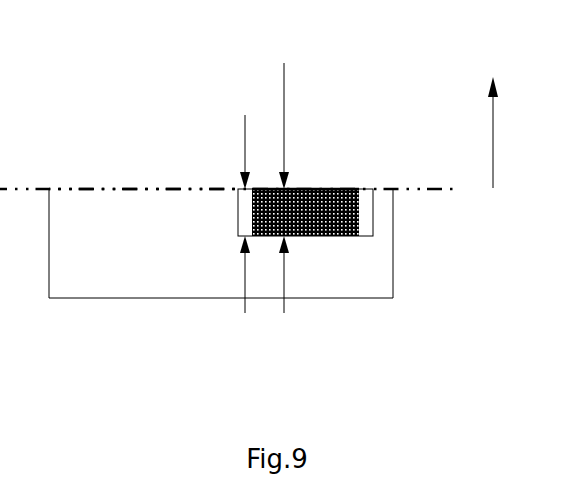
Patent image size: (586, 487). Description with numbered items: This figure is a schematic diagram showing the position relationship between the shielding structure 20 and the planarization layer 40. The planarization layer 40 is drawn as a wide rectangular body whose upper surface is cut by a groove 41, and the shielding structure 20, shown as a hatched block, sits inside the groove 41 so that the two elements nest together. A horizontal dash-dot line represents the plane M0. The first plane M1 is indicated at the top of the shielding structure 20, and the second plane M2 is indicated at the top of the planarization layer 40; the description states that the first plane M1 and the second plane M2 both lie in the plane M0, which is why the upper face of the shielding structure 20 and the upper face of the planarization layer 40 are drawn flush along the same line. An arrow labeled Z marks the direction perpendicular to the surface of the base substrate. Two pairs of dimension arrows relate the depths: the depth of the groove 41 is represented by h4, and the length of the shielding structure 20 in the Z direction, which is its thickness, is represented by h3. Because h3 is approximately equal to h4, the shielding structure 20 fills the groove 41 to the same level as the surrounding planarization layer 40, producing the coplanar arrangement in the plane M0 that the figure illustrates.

The plane M0 is at (430, 190).
The planarization layer 40 is at (111, 273).
The groove 41 is at (368, 197).
The shielding structure 20 is at (345, 236).
The first plane M1 is at (302, 189).
The second plane M2 is at (122, 187).
The thickness of the shielding structure h3 is at (292, 168).
The depth of the groove h4 is at (247, 196).
The direction perpendicular to the surface of the base substrate Z is at (505, 132).